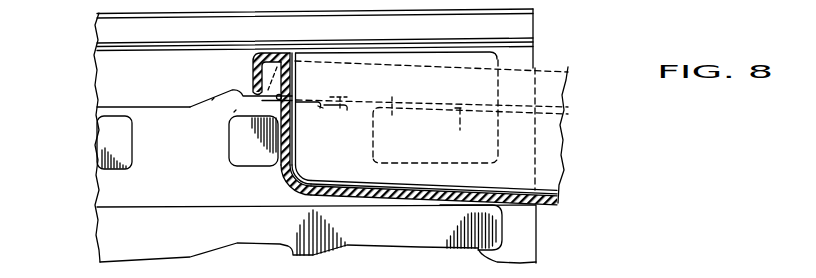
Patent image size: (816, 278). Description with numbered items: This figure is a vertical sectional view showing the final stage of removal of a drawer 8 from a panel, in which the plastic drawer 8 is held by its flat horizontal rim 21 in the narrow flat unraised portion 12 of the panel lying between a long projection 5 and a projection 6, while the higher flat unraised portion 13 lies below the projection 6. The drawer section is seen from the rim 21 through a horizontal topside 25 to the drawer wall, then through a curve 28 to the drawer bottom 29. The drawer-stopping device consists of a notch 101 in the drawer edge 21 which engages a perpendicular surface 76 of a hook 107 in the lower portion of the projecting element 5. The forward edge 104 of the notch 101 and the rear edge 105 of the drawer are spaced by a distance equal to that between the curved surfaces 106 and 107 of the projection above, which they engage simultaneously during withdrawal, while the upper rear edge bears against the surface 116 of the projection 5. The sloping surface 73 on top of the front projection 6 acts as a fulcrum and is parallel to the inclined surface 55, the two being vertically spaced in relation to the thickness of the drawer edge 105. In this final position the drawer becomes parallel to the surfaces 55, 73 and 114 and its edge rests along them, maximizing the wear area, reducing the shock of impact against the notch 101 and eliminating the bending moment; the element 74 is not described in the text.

The long projection 5 is at (415, 45).
The projection 6 is at (130, 170).
The drawer 8 is at (561, 152).
The flat unraised portion 12 is at (104, 116).
The flat unraised portion 13 is at (170, 195).
The flat horizontal rim 21 is at (243, 92).
The horizontal topside 25 is at (265, 52).
The curve 28 is at (298, 177).
The drawer bottom 29 is at (352, 186).
The inclined surface 55 is at (391, 118).
The sloping surface 73 is at (475, 104).
The fastener 74 is at (461, 116).
The perpendicular surface 76 is at (297, 93).
The notch 101 is at (322, 117).
The forward edge of the drawer notch 104 is at (338, 112).
The rear edge of the drawer 105 is at (234, 112).
The curved surface 106 is at (212, 100).
The hook 107 is at (342, 95).
The surface 114 is at (296, 43).
The surface 116 is at (142, 110).